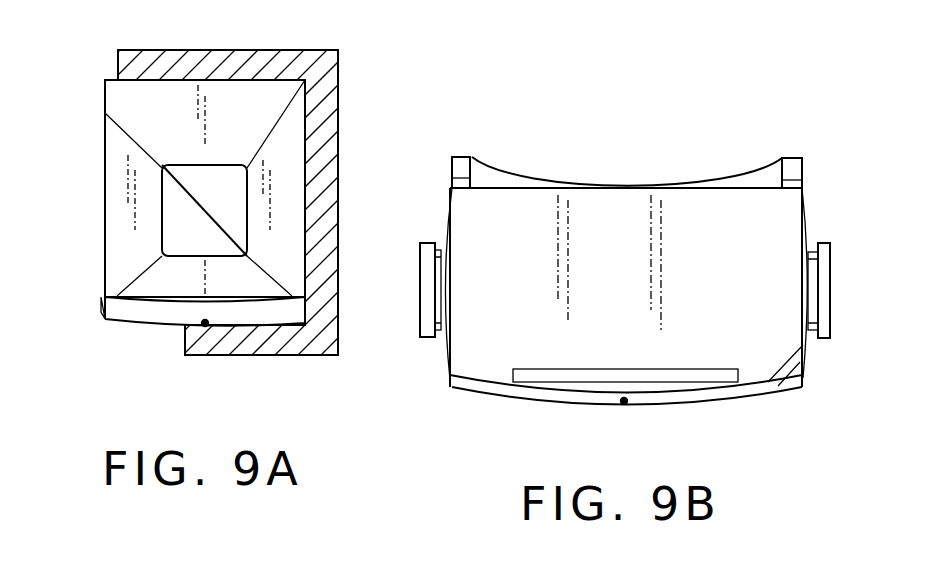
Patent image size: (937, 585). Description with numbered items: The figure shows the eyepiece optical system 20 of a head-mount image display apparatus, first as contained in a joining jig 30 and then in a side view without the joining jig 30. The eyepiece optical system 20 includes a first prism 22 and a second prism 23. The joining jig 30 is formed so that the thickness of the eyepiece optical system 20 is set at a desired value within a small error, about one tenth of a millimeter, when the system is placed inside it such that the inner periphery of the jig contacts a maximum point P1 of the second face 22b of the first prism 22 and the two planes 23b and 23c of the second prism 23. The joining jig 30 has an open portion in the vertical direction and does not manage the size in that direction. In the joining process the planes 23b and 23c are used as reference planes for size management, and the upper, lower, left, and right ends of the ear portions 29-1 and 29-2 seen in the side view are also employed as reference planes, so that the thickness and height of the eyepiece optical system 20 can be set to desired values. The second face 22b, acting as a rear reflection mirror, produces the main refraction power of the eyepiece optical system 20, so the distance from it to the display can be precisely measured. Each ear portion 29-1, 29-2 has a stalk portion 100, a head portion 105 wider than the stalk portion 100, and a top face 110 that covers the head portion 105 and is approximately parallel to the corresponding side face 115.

In FIG. 9A, the eyepiece optical system 20 is at (97, 148).
In FIG. 9A, the first prism 22 is at (112, 178).
In FIG. 9A, the second face 22b is at (143, 327).
In FIG. 9A, the second prism 23 is at (288, 190).
In FIG. 9A, the plane 23b is at (266, 83).
In FIG. 9B, the plane 23b is at (475, 155).
In FIG. 9A, the plane 23c is at (303, 250).
In FIG. 9A, the ear portion 29-1 is at (167, 218).
In FIG. 9B, the ear portion 29-1 is at (425, 308).
In FIG. 9A, the ear portion 29-2 is at (281, 210).
In FIG. 9B, the ear portion 29-2 is at (413, 340).
In FIG. 9A, the joining jig 30 is at (338, 133).
In FIG. 9B, the stalk portion 100 is at (812, 338).
In FIG. 9B, the head portion 105 is at (825, 338).
In FIG. 9B, the top face 110 is at (832, 285).
In FIG. 9B, the side face 115 is at (808, 342).
In FIG. 9A, the maximum point P1 is at (207, 329).
In FIG. 9B, the maximum point P1 is at (628, 405).